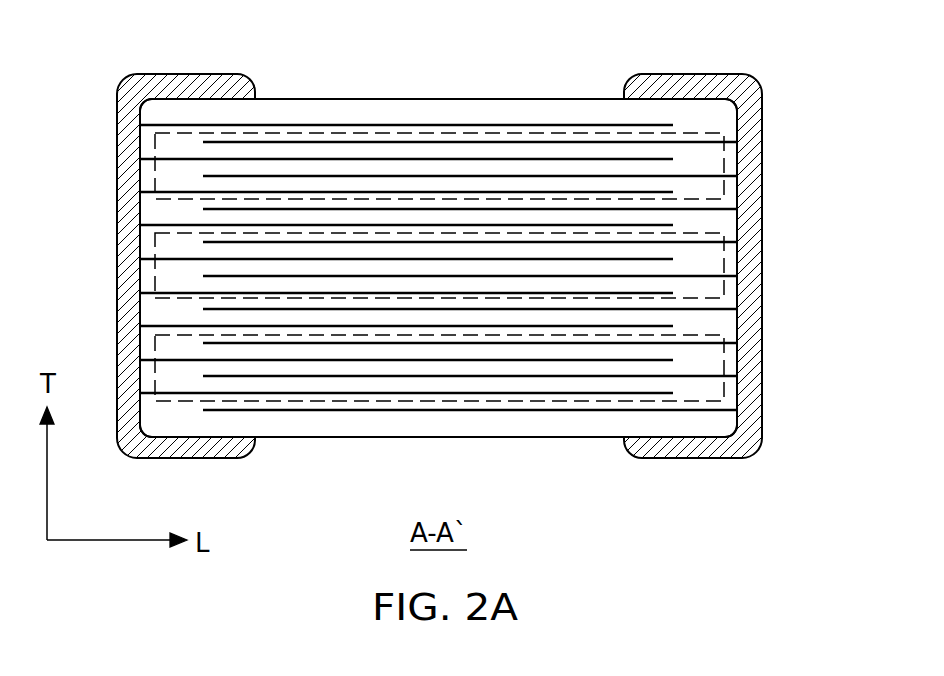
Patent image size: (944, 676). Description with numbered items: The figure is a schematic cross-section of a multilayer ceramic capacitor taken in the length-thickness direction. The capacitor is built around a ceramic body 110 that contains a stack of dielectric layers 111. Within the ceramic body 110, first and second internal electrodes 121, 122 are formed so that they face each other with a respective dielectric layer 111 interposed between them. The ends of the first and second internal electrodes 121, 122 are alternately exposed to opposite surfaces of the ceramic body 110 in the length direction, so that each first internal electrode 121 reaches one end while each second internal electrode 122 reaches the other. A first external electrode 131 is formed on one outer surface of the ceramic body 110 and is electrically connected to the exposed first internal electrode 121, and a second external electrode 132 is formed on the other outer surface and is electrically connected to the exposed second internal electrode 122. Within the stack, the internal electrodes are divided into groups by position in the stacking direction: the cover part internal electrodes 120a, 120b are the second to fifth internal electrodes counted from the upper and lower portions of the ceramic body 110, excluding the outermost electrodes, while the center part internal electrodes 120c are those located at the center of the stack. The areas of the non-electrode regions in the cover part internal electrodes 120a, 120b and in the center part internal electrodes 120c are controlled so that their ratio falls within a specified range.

The ceramic body 110 is at (357, 99).
The dielectric layer 111 is at (670, 318).
The first internal electrode 121 is at (170, 159).
The second internal electrode 122 is at (720, 410).
The first external electrode 131 is at (183, 80).
The second external electrode 132 is at (675, 88).
The cover part internal electrodes 120a is at (724, 136).
The cover part internal electrodes 120b is at (724, 361).
The center part internal electrodes 120c is at (724, 236).